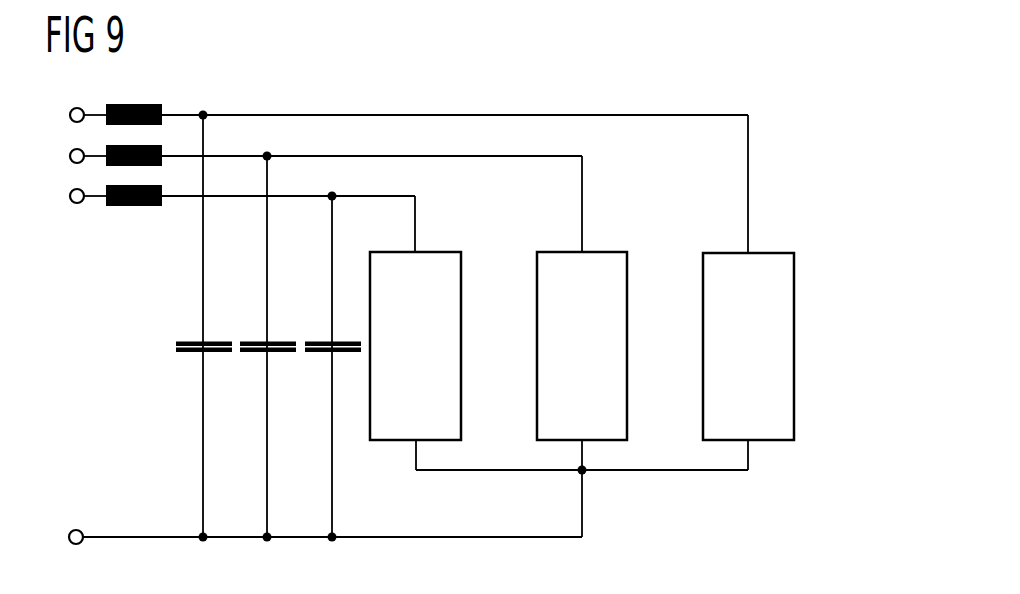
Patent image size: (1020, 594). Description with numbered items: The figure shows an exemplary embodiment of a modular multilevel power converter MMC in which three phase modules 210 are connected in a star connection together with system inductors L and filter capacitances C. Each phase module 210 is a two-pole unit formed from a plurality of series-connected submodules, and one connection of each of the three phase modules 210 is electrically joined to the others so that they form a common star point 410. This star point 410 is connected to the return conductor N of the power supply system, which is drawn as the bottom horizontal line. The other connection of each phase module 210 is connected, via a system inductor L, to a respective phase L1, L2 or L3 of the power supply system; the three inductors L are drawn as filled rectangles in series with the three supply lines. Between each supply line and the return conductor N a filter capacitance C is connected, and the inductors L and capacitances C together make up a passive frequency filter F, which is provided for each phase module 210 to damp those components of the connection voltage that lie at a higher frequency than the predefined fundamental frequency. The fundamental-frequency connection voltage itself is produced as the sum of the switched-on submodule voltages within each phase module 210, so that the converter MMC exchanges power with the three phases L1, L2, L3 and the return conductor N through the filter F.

The phase module 210 is at (462, 345).
The star point 410 is at (585, 473).
The modular multilevel power converter MMC is at (733, 93).
The passive frequency filter F is at (122, 402).
The system inductor L is at (141, 155).
The filter capacitance C is at (268, 329).
The phase L1 is at (74, 115).
The phase L2 is at (74, 156).
The phase L3 is at (74, 196).
The return conductor N is at (315, 538).